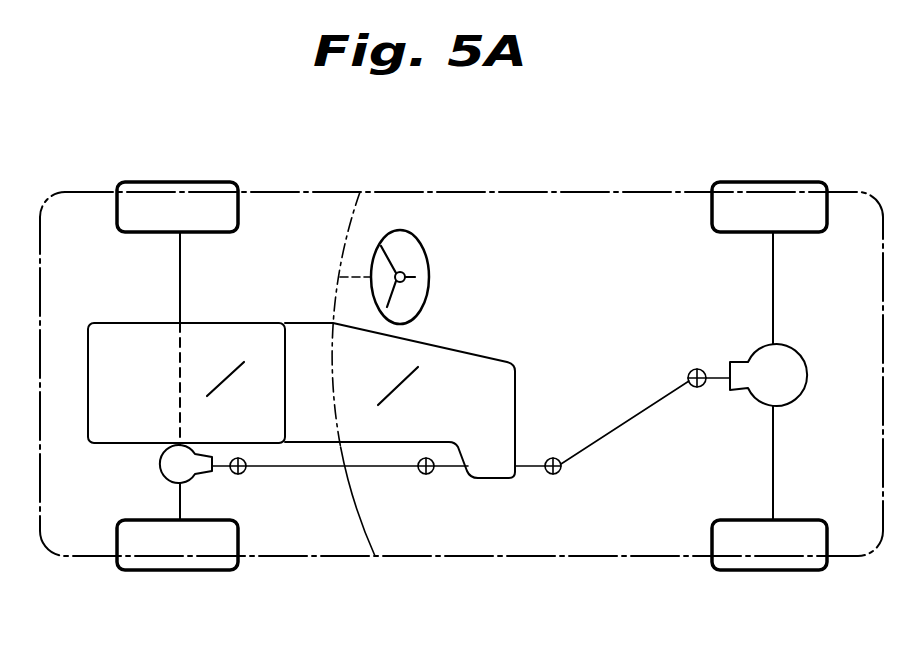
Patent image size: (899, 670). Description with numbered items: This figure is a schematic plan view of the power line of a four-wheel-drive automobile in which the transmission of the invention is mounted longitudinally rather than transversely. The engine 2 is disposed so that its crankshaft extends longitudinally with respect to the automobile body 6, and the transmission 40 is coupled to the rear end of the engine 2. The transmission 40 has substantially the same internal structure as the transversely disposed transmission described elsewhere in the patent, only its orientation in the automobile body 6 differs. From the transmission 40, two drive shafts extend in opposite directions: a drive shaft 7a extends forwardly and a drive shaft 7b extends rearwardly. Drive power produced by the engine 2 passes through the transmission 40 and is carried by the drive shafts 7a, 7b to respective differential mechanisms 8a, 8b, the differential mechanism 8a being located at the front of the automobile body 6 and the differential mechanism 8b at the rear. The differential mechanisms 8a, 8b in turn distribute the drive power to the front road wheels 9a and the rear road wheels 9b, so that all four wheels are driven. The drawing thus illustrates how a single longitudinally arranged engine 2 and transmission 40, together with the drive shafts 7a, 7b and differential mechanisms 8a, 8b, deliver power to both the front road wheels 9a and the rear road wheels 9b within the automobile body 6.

The automobile body 6 is at (523, 192).
The front road wheels 9a is at (172, 182).
The rear road wheels 9b is at (757, 182).
The engine 2 is at (198, 335).
The transmission 40 is at (450, 358).
The front differential mechanism 8a is at (170, 470).
The rear differential mechanism 8b is at (790, 376).
The front drive shaft 7a is at (387, 470).
The rear drive shaft 7b is at (621, 431).